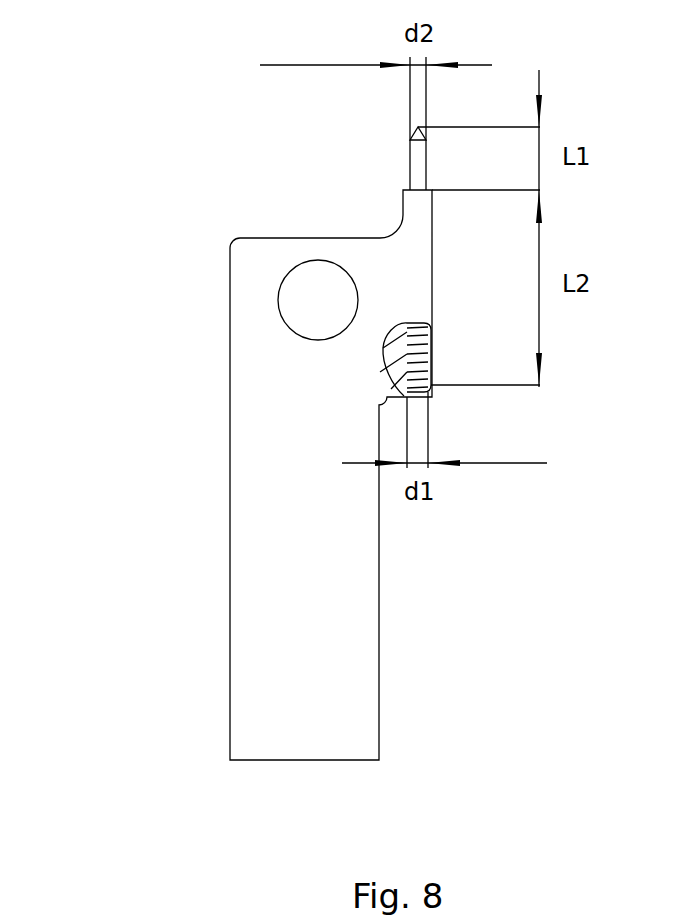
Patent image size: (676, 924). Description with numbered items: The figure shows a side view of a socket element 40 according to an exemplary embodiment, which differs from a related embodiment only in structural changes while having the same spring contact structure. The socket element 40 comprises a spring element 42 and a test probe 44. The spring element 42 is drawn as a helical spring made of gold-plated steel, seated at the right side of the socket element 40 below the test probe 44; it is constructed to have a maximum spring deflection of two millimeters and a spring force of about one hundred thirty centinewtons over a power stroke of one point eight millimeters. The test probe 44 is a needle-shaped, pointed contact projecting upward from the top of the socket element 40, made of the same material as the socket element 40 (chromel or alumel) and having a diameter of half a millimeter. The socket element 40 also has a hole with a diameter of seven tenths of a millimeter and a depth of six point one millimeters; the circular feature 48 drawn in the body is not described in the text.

The socket element 40 is at (182, 447).
The spring element 42 is at (408, 365).
The test probe 44 is at (413, 168).
The hole 48 is at (328, 298).